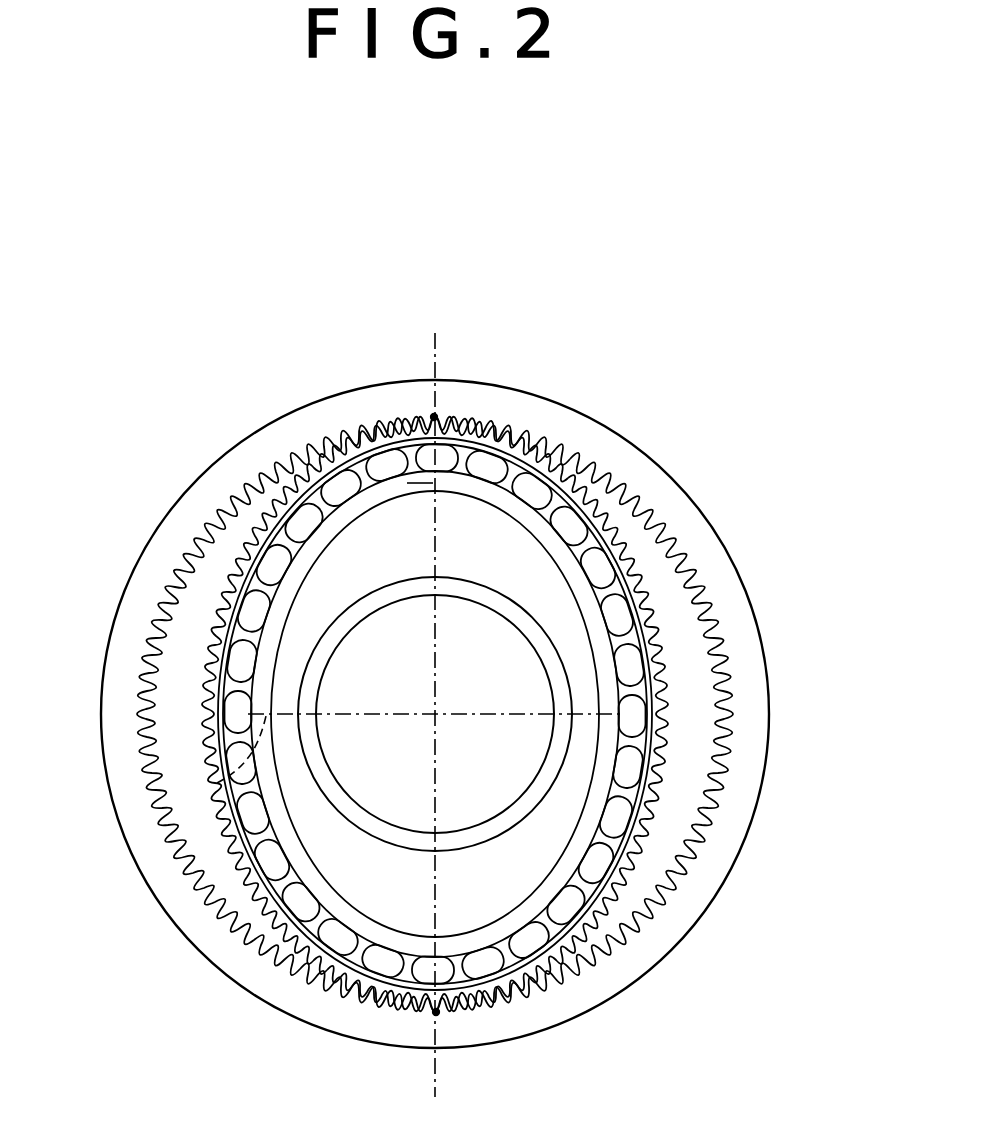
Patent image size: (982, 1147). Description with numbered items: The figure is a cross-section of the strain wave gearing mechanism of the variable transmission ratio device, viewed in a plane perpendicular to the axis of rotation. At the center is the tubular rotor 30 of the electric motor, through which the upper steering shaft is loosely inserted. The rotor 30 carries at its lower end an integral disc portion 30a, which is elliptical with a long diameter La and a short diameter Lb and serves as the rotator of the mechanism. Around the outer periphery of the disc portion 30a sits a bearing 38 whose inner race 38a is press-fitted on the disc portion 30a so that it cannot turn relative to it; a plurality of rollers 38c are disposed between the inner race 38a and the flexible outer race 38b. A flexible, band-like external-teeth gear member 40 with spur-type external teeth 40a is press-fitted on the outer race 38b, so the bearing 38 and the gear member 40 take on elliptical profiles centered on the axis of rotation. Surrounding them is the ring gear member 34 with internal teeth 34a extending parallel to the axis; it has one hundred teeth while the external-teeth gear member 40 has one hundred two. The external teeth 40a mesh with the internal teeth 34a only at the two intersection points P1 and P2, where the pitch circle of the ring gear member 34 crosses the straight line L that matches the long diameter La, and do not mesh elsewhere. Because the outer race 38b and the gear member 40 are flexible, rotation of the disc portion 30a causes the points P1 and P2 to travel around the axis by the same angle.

The rotor 30 is at (360, 592).
The disc portion 30a is at (578, 768).
The ring gear member 34 is at (747, 583).
The internal teeth 34a is at (630, 490).
The bearing 38 is at (623, 875).
The inner race 38a is at (320, 965).
The outer race 38b is at (587, 940).
The rollers 38c is at (287, 937).
The external-teeth gear member 40 is at (717, 650).
The external teeth 40a is at (632, 573).
The straight line L is at (432, 363).
The long diameter La is at (407, 483).
The short diameter Lb is at (217, 783).
The intersection point P1 is at (434, 417).
The intersection point P2 is at (436, 1012).